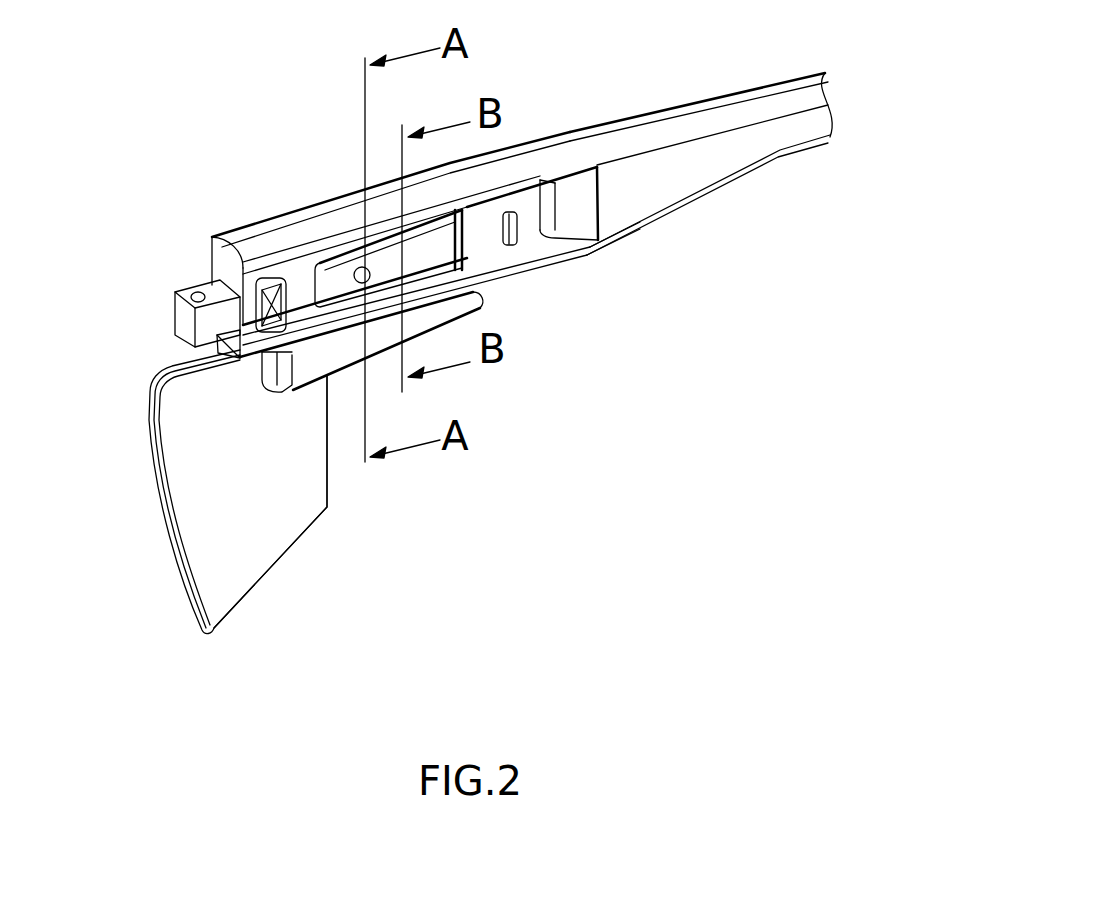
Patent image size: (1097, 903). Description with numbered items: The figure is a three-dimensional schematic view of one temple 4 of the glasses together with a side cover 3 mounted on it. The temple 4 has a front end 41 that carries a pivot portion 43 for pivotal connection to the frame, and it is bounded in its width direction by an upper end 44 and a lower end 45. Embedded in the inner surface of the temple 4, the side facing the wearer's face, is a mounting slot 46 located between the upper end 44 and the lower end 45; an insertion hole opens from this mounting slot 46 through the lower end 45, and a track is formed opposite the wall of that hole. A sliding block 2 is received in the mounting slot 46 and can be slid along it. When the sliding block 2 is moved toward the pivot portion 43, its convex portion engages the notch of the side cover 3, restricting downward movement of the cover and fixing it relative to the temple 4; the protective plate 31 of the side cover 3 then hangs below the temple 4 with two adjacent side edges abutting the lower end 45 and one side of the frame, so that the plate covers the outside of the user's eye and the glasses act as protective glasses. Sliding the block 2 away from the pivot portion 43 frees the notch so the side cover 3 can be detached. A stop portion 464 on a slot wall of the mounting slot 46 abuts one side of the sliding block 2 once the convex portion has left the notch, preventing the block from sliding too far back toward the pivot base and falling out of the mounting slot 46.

The sliding block 2 is at (477, 300).
The side cover 3 is at (285, 580).
The protective plate 31 is at (205, 505).
The temple 4 is at (738, 90).
The front end 41 is at (232, 243).
The pivot portion 43 is at (178, 293).
The upper end 44 is at (627, 120).
The lower end 45 is at (600, 250).
The mounting slot 46 is at (580, 190).
The stop portion 464 is at (520, 240).